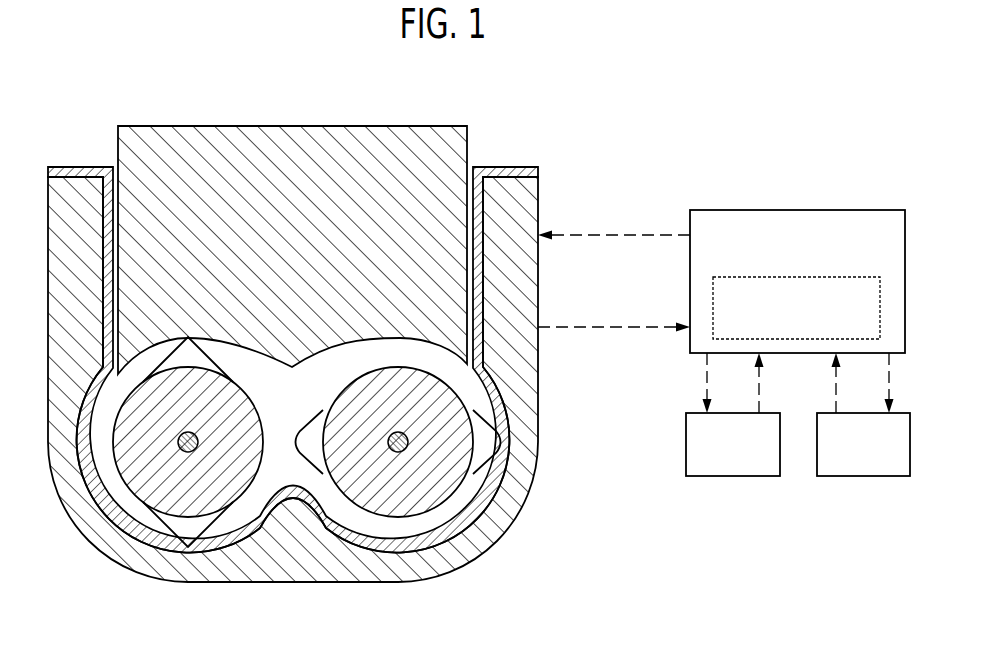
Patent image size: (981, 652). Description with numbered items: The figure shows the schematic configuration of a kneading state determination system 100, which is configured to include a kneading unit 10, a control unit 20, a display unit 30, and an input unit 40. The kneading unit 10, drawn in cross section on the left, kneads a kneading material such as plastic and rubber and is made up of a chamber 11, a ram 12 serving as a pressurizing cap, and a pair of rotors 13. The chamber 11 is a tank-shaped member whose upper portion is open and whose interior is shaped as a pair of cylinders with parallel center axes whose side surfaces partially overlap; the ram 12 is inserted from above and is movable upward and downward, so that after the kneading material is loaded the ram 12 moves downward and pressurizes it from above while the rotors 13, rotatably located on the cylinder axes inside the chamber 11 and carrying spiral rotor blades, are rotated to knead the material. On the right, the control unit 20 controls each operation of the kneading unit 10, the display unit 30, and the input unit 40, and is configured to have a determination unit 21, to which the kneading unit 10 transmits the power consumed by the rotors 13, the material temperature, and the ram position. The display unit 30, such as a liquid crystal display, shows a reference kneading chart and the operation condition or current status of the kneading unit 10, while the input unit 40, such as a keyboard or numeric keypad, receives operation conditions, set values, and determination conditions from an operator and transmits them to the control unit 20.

The kneading state determination system 100 is at (750, 137).
The kneading unit 10 is at (495, 121).
The chamber 11 is at (540, 193).
The ram 12 is at (118, 147).
The rotors 13 is at (137, 497).
The control unit 20 is at (807, 210).
The determination unit 21 is at (820, 277).
The display unit 30 is at (742, 476).
The input unit 40 is at (857, 476).